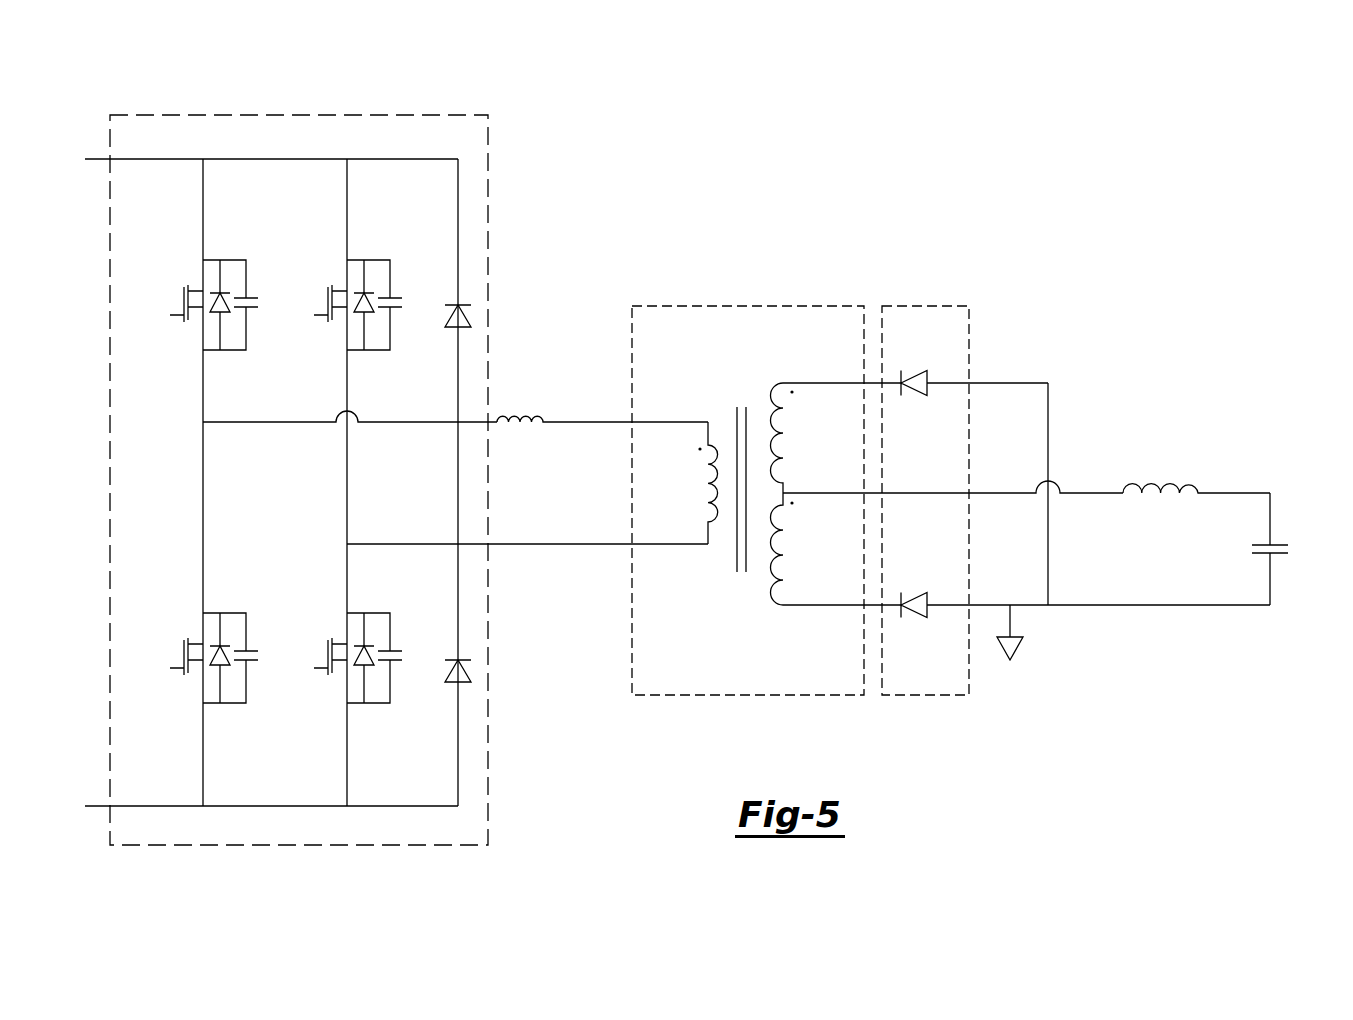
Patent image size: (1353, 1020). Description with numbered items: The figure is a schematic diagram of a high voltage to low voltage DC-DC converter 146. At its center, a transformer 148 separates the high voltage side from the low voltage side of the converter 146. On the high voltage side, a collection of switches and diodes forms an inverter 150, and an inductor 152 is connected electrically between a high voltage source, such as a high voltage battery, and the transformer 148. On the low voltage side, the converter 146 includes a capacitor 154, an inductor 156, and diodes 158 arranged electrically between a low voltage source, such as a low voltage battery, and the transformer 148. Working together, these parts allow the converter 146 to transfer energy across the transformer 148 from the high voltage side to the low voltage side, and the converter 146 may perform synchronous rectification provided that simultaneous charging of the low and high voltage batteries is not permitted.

The HV to LV DC-DC converter 146 is at (1104, 279).
The transformer 148 is at (748, 305).
The inverter 150 is at (300, 113).
The inductor 152 is at (538, 411).
The capacitor 154 is at (1268, 544).
The inductor 156 is at (1190, 475).
The diodes 158 is at (925, 305).